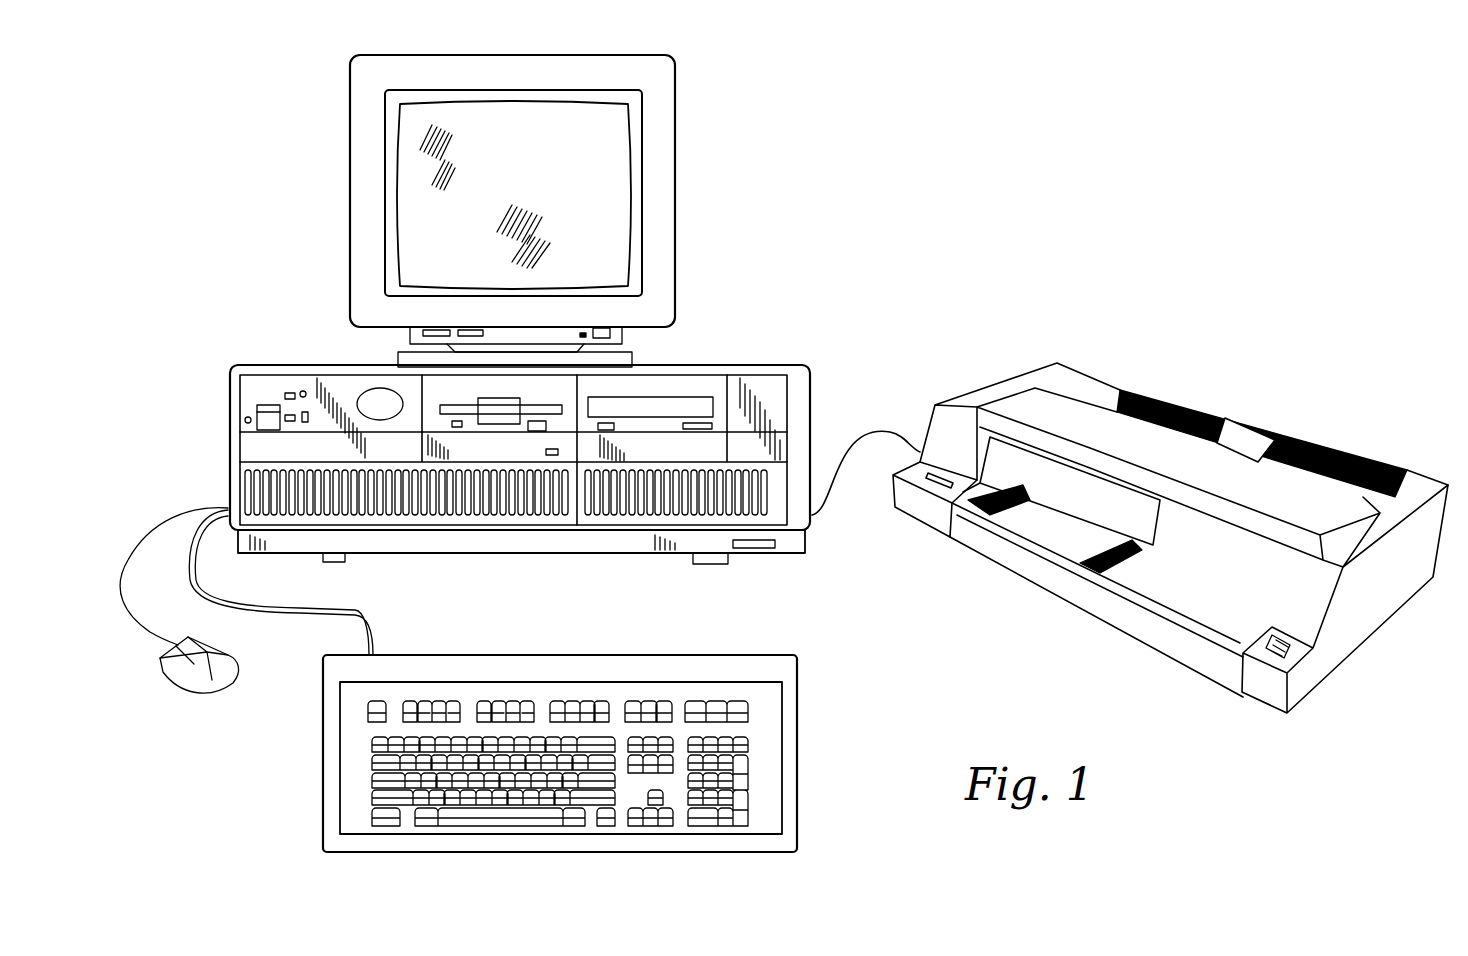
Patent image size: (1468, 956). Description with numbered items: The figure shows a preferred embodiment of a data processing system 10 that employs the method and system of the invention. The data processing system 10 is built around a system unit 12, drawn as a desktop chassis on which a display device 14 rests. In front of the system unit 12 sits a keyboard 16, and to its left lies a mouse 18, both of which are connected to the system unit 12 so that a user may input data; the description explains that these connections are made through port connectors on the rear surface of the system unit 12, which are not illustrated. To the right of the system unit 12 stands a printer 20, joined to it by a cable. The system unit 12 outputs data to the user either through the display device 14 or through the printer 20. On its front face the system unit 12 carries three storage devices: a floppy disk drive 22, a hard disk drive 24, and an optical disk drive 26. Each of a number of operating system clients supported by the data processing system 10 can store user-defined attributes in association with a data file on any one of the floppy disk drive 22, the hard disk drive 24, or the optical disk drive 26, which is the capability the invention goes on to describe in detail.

The data processing system 10 is at (886, 179).
The system unit 12 is at (520, 444).
The display device 14 is at (683, 226).
The keyboard 16 is at (675, 652).
The mouse 18 is at (177, 673).
The printer 20 is at (996, 375).
The floppy disk drive 22 is at (504, 420).
The hard disk drive 24 is at (474, 452).
The optical disk drive 26 is at (650, 382).